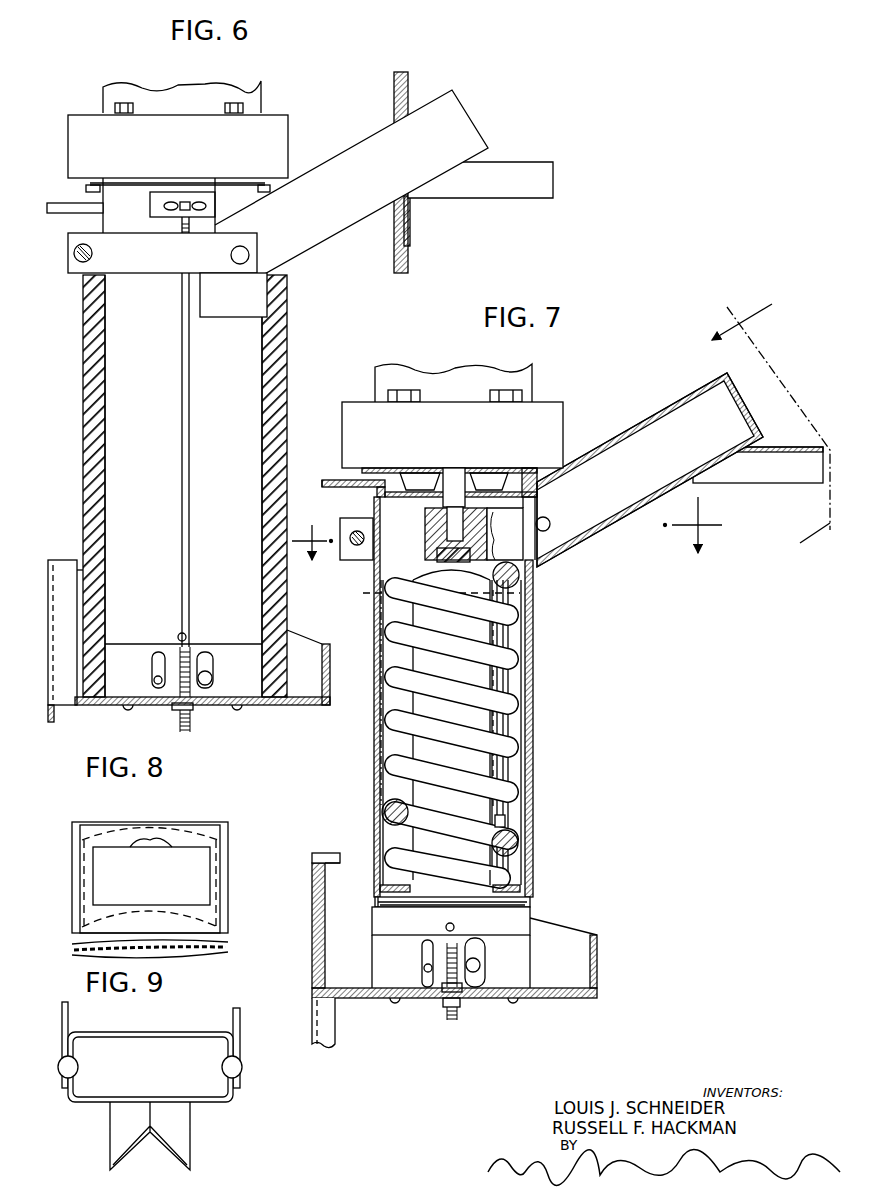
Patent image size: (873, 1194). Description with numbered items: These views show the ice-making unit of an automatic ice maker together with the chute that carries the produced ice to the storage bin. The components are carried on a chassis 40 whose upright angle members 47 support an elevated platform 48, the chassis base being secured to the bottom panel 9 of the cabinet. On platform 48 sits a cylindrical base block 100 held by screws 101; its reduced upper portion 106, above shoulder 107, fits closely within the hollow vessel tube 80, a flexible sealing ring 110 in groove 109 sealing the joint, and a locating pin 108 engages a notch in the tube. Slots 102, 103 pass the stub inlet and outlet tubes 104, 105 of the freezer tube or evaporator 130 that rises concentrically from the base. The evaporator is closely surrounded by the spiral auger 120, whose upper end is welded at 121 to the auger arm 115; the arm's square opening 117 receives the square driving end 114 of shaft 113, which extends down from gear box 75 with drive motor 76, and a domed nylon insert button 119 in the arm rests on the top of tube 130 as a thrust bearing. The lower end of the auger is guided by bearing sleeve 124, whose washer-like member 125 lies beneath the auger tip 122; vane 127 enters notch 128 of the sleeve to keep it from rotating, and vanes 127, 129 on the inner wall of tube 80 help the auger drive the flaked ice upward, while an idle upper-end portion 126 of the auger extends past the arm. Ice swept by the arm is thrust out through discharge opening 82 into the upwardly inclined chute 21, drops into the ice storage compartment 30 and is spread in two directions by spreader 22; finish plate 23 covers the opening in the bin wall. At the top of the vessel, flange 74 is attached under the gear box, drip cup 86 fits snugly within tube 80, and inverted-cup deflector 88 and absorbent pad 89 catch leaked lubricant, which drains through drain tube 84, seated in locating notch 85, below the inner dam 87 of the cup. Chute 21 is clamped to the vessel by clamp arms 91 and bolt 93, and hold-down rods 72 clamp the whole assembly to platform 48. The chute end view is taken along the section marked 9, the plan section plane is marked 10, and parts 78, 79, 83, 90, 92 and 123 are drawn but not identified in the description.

In FIG. 7, the bottom panel 9 is at (771, 428).
In FIG. 7, the section line 10- 10 is at (506, 528).
In FIG. 6, the chute 21 is at (466, 128).
In FIG. 7, the chute 21 is at (644, 420).
In FIG. 9, the chute 21 is at (207, 1106).
In FIG. 6, the spreader 22 is at (524, 164).
In FIG. 7, the spreader 22 is at (758, 487).
In FIG. 9, the spreader 22 is at (120, 1133).
In FIG. 6, the finish plate 23 is at (412, 228).
In FIG. 6, the ice storage compartment 30 is at (410, 82).
In FIG. 6, the chassis 40 is at (46, 668).
In FIG. 7, the chassis 40 is at (601, 960).
In FIG. 6, the upright angle members 47 is at (52, 632).
In FIG. 7, the upright angle members 47 is at (311, 1031).
In FIG. 6, the platform support 48 is at (305, 643).
In FIG. 7, the platform support 48 is at (343, 872).
In FIG. 6, the hold-down rods 72 is at (180, 443).
In FIG. 6, the flange 74 is at (168, 182).
In FIG. 7, the flange 74 is at (360, 471).
In FIG. 6, the gear box 75 is at (280, 140).
In FIG. 7, the gear box 75 is at (565, 418).
In FIG. 6, the drive motor 76 is at (252, 95).
In FIG. 7, the drive motor 76 is at (535, 380).
In FIG. 6, the nut block 78 is at (200, 195).
In FIG. 6, the housing wall 79 is at (83, 372).
In FIG. 6, the vessel tube 80 is at (100, 462).
In FIG. 7, the vessel tube 80 is at (532, 715).
In FIG. 8, the vessel tube 80 is at (80, 948).
In FIG. 7, the discharge opening 82 is at (525, 525).
In FIG. 8, the discharge opening 82 is at (100, 880).
In FIG. 6, the wall section 83 is at (225, 318).
In FIG. 7, the wall section 83 is at (537, 596).
In FIG. 8, the wall section 83 is at (98, 932).
In FIG. 6, the drain tube 84 is at (58, 203).
In FIG. 7, the drain tube 84 is at (326, 488).
In FIG. 7, the locating notch 85 is at (370, 492).
In FIG. 7, the drip cup 86 is at (384, 497).
In FIG. 7, the inner circular dam 87 is at (425, 498).
In FIG. 7, the inverted-cup deflector member 88 is at (402, 485).
In FIG. 7, the washer-like pad 89 is at (430, 472).
In FIG. 8, the cover 90 is at (113, 829).
In FIG. 6, the clamp arms 91 is at (165, 266).
In FIG. 7, the clamp arms 91 is at (553, 522).
In FIG. 9, the clamp arms 91 is at (68, 1028).
In FIG. 6, the roller 92 is at (249, 254).
In FIG. 9, the roller 92 is at (77, 1069).
In FIG. 6, the bolt 93 is at (80, 262).
In FIG. 7, the bolt 93 is at (358, 550).
In FIG. 6, the base block 100 is at (256, 670).
In FIG. 7, the base block 100 is at (516, 952).
In FIG. 6, the screws 101 is at (130, 709).
In FIG. 7, the screws 101 is at (396, 1003).
In FIG. 6, the slot 102 is at (152, 664).
In FIG. 7, the slot 102 is at (422, 955).
In FIG. 6, the slot 103 is at (214, 664).
In FIG. 7, the slot 103 is at (481, 965).
In FIG. 6, the stub inlet tube 104 is at (154, 681).
In FIG. 7, the stub inlet tube 104 is at (425, 969).
In FIG. 6, the stub outlet tube 105 is at (213, 680).
In FIG. 7, the stub outlet tube 105 is at (479, 972).
In FIG. 7, the reduced upwardly extending portion 106 is at (512, 912).
In FIG. 7, the shoulder 107 is at (513, 933).
In FIG. 6, the locating pin 108 is at (185, 635).
In FIG. 7, the locating pin 108 is at (446, 928).
In FIG. 7, the groove 109 is at (400, 901).
In FIG. 7, the flexible sealing ring 110 is at (378, 903).
In FIG. 7, the shaft 113 is at (456, 480).
In FIG. 7, the square driving end 114 is at (462, 524).
In FIG. 7, the auger arm 115 is at (520, 562).
In FIG. 7, the square vertical opening 117 is at (440, 553).
In FIG. 7, the insert button 119 is at (452, 576).
In FIG. 7, the spiral auger 120 is at (392, 632).
In FIG. 7, the welding material 121 is at (505, 534).
In FIG. 7, the auger tip 122 is at (519, 875).
In FIG. 7, the roller 123 is at (520, 843).
In FIG. 7, the bearing sleeve 124 is at (381, 827).
In FIG. 7, the washer-like member 125 is at (380, 887).
In FIG. 7, the top end portion 126 is at (533, 615).
In FIG. 7, the vane 127 is at (492, 488).
In FIG. 7, the notch 128 is at (506, 820).
In FIG. 7, the vane 129 is at (384, 658).
In FIG. 7, the freezer tube 130 is at (503, 638).